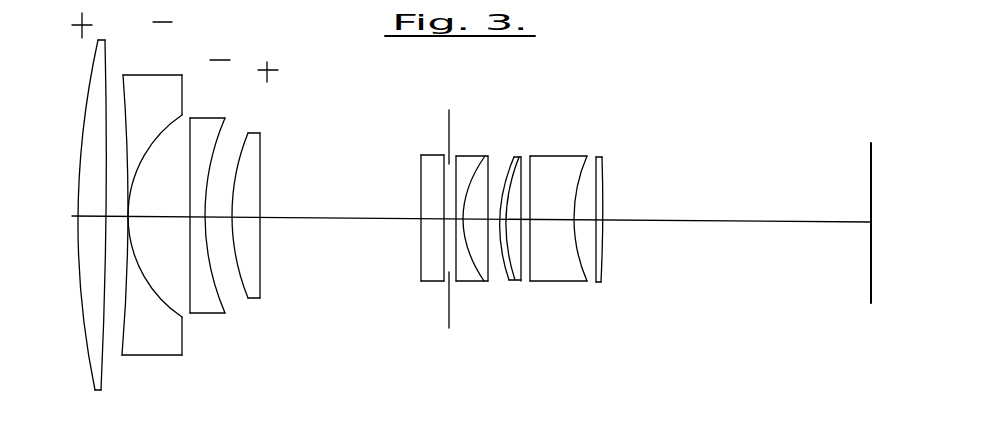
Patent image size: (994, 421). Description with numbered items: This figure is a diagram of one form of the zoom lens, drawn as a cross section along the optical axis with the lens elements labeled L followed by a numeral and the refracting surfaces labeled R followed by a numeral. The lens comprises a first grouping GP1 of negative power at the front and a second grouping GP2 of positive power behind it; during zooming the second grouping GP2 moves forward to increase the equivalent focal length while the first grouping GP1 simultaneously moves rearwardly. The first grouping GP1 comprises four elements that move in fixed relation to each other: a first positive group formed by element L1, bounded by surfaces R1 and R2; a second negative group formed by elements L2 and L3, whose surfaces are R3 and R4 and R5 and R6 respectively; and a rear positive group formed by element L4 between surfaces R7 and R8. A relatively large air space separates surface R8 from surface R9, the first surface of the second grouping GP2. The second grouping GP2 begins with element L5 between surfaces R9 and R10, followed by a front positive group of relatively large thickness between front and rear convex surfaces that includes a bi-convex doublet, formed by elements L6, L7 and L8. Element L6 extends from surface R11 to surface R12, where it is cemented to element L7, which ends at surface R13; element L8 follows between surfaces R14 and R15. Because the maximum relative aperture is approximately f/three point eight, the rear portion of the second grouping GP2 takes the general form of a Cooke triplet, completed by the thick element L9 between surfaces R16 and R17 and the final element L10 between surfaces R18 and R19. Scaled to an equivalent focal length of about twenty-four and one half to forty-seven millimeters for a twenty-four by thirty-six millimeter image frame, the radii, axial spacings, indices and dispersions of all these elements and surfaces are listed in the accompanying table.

The first positive group element L1 is at (103, 55).
The second negative group element L2 is at (157, 88).
The second negative group element L3 is at (210, 128).
The rear positive group element L4 is at (257, 150).
The lens element L5 is at (433, 163).
The lens element L6 is at (469, 162).
The lens element L7 is at (483, 178).
The lens element L8 is at (517, 160).
The lens element L9 is at (555, 168).
The lens element L10 is at (600, 167).
The surface R1 is at (93, 366).
The surface R2 is at (103, 362).
The surface R3 is at (116, 348).
The surface R4 is at (146, 278).
The surface R5 is at (190, 200).
The surface R6 is at (210, 268).
The surface R7 is at (241, 285).
The surface R8 is at (259, 253).
The surface R9 is at (421, 262).
The surface R10 is at (444, 244).
The surface R11 is at (455, 257).
The surface R12 is at (480, 265).
The surface R13 is at (489, 266).
The surface R14 is at (505, 263).
The surface R15 is at (519, 249).
The surface R16 is at (530, 240).
The surface R17 is at (575, 240).
The surface R18 is at (596, 208).
The surface R19 is at (601, 280).
The first grouping GP1 is at (206, 343).
The second grouping GP2 is at (508, 342).